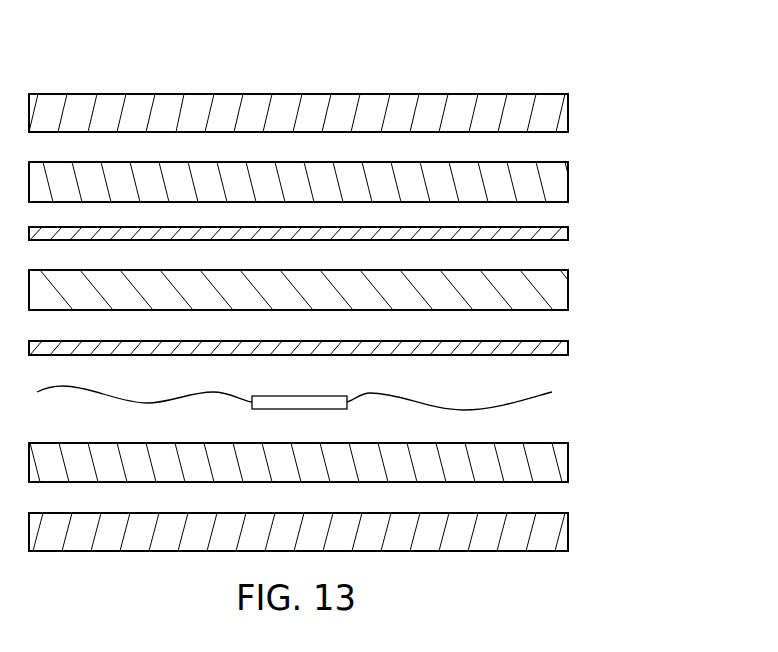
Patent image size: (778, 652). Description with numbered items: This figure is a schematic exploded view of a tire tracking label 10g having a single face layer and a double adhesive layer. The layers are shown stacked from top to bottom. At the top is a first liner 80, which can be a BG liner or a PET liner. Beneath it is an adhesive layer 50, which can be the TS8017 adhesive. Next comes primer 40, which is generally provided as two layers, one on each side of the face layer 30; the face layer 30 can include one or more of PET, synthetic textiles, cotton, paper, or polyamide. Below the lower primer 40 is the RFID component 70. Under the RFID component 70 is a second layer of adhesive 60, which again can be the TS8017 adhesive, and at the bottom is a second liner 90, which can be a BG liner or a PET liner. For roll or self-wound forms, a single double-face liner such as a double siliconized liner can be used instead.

The label 10g is at (670, 115).
The first liner 80 is at (569, 112).
The adhesive layer 50 is at (569, 182).
The primer 40 is at (569, 234).
The face layer 30 is at (569, 291).
The RFID component 70 is at (583, 396).
The second layer of adhesive 60 is at (569, 463).
The second liner 90 is at (569, 532).